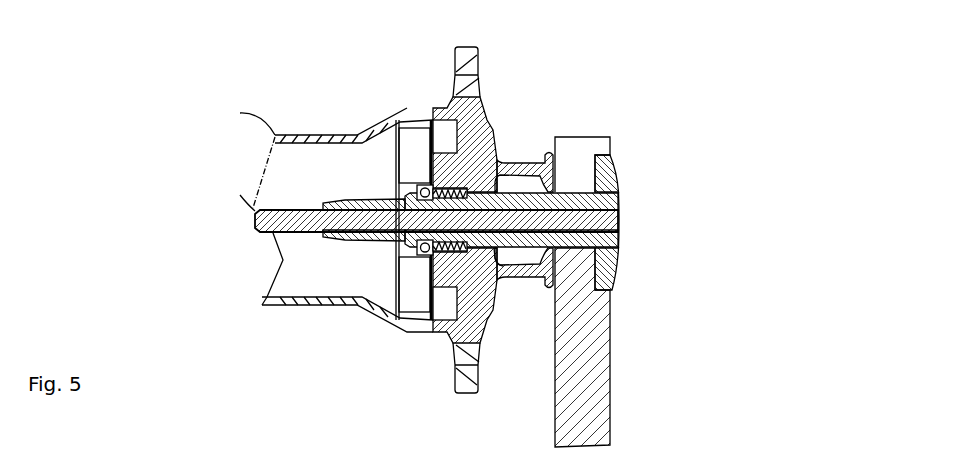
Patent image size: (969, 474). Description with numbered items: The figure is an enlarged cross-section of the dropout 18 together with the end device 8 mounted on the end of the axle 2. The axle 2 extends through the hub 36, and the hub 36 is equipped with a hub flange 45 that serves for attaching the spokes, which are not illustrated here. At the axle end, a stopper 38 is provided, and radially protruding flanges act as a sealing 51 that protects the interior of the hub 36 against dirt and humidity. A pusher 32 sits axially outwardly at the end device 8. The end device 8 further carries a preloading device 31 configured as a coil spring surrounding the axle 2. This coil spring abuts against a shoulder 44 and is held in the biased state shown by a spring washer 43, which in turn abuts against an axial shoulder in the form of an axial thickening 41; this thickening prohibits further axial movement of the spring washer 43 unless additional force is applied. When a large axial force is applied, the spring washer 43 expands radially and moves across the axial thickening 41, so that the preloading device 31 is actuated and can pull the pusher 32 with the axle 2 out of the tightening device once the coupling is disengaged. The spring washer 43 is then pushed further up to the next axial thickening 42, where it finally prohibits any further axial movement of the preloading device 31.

The axle 2 is at (253, 215).
The end device 8 is at (605, 182).
The dropout 18 is at (598, 378).
The preloading device 31 is at (413, 280).
The pusher 32 is at (606, 262).
The hub 36 is at (275, 134).
The stopper 38 is at (527, 165).
The axial thickening 41 is at (403, 188).
The axial thickening 42 is at (356, 197).
The spring washer 43 is at (420, 245).
The shoulder 44 is at (490, 248).
The hub flange 45 is at (467, 58).
The sealing 51 is at (490, 143).